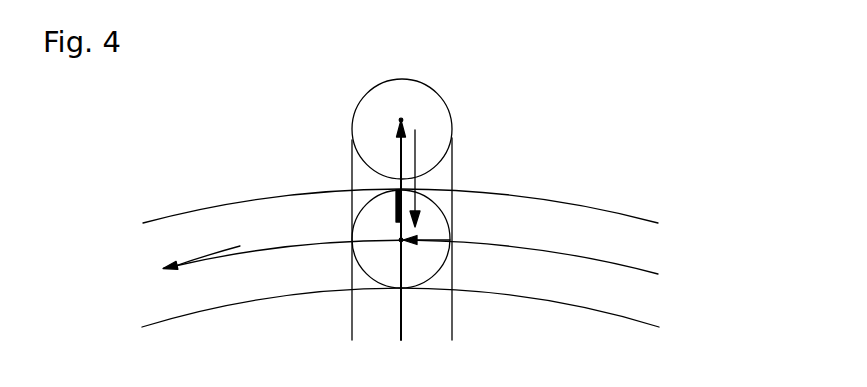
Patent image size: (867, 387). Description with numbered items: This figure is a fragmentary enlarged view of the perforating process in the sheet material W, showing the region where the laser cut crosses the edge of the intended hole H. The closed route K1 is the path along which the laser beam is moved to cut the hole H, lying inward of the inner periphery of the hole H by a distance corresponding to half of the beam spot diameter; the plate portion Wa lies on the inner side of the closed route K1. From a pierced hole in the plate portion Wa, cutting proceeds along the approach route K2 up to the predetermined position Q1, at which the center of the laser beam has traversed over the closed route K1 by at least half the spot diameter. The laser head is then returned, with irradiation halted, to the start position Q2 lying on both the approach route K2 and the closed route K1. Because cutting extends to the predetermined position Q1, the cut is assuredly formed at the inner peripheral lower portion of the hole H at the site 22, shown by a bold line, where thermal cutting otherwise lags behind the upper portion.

The sheet material W is at (605, 178).
The hole H is at (627, 217).
The plate portion Wa is at (558, 315).
The closed route K1 is at (233, 257).
The approach route K2 is at (401, 313).
The predetermined position Q1 is at (401, 118).
The start position Q2 is at (401, 240).
The site 22 is at (396, 207).